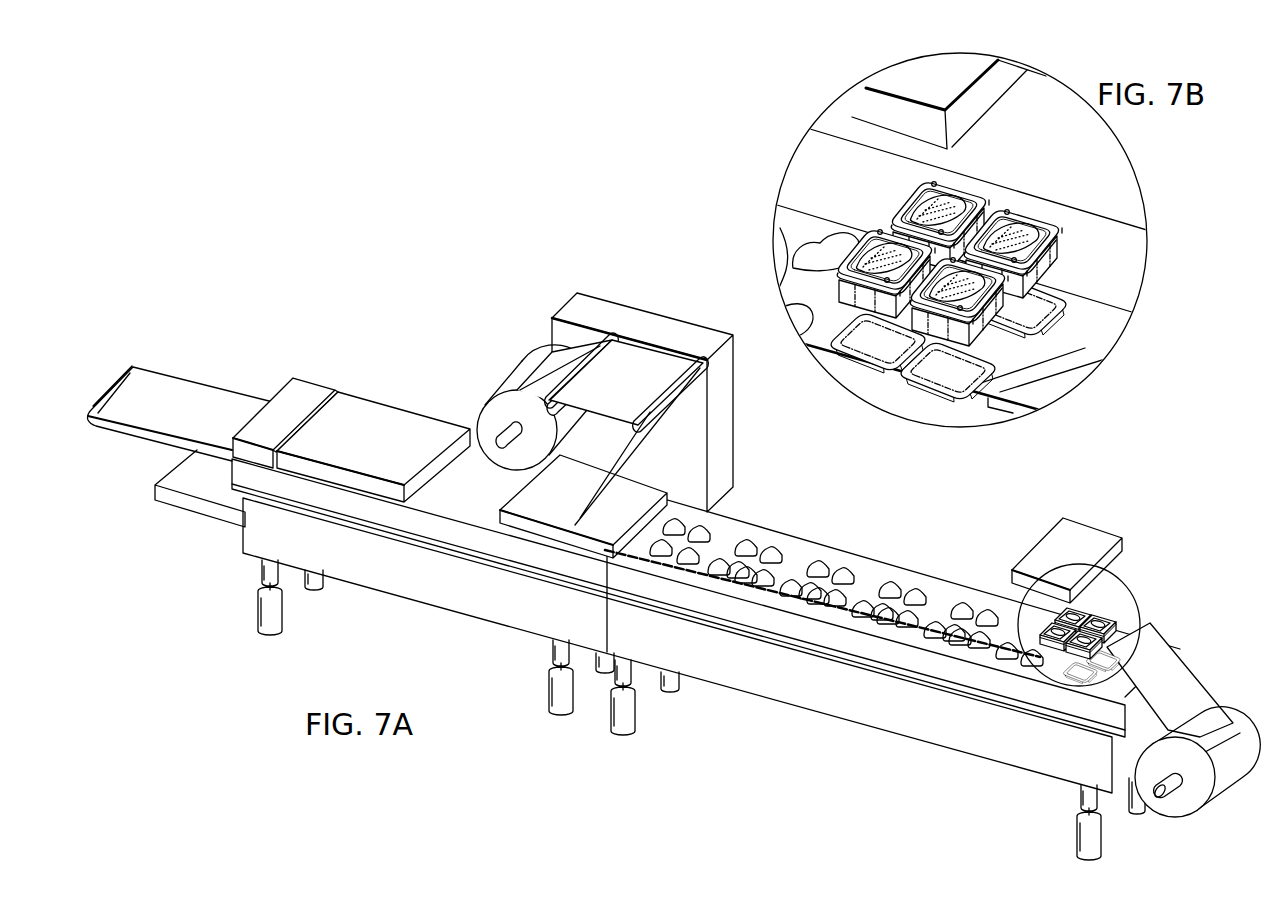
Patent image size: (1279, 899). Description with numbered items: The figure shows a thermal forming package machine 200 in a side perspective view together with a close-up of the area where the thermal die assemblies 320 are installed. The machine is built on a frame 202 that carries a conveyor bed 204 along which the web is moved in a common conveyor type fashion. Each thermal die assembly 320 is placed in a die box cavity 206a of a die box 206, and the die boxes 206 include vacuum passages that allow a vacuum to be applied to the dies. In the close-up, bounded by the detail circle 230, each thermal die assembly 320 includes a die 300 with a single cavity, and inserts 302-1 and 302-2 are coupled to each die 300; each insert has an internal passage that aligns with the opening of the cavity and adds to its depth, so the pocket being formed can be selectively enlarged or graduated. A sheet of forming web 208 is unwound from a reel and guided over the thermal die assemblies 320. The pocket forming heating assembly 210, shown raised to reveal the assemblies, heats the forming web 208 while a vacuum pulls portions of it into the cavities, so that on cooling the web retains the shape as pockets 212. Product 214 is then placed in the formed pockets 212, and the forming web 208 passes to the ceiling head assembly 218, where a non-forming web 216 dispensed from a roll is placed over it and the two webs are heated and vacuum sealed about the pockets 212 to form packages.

In FIG. 7A, the thermal forming package machine 200 is at (506, 300).
In FIG. 7A, the frame 202 is at (778, 688).
In FIG. 7A, the conveyor bed 204 is at (860, 578).
In FIG. 7A, the die box 206 is at (1113, 643).
In FIG. 7B, the die box 206 is at (988, 363).
In FIG. 7B, the die box cavity 206a is at (1027, 318).
In FIG. 7A, the forming web 208 is at (785, 557).
In FIG. 7B, the forming web 208 is at (1080, 368).
In FIG. 7A, the pocket forming heating assembly 210 is at (1080, 540).
In FIG. 7B, the pocket forming heating assembly 210 is at (900, 82).
In FIG. 7A, the pocket 212 is at (867, 615).
In FIG. 7B, the pocket 212 is at (827, 250).
In FIG. 7A, the product 214 is at (812, 560).
In FIG. 7A, the non-forming web 216 is at (540, 375).
In FIG. 7A, the ceiling head assembly 218 is at (462, 480).
In FIG. 7A, the detail region 230 is at (1055, 570).
In FIG. 7B, the detail region 230 is at (1033, 418).
In FIG. 7B, the die 300 is at (922, 241).
In FIG. 7B, the insert 302-1 is at (1017, 258).
In FIG. 7B, the insert 302-2 is at (1020, 212).
In FIG. 7A, the thermal die assembly 320 is at (1067, 653).
In FIG. 7B, the thermal die assembly 320 is at (920, 241).